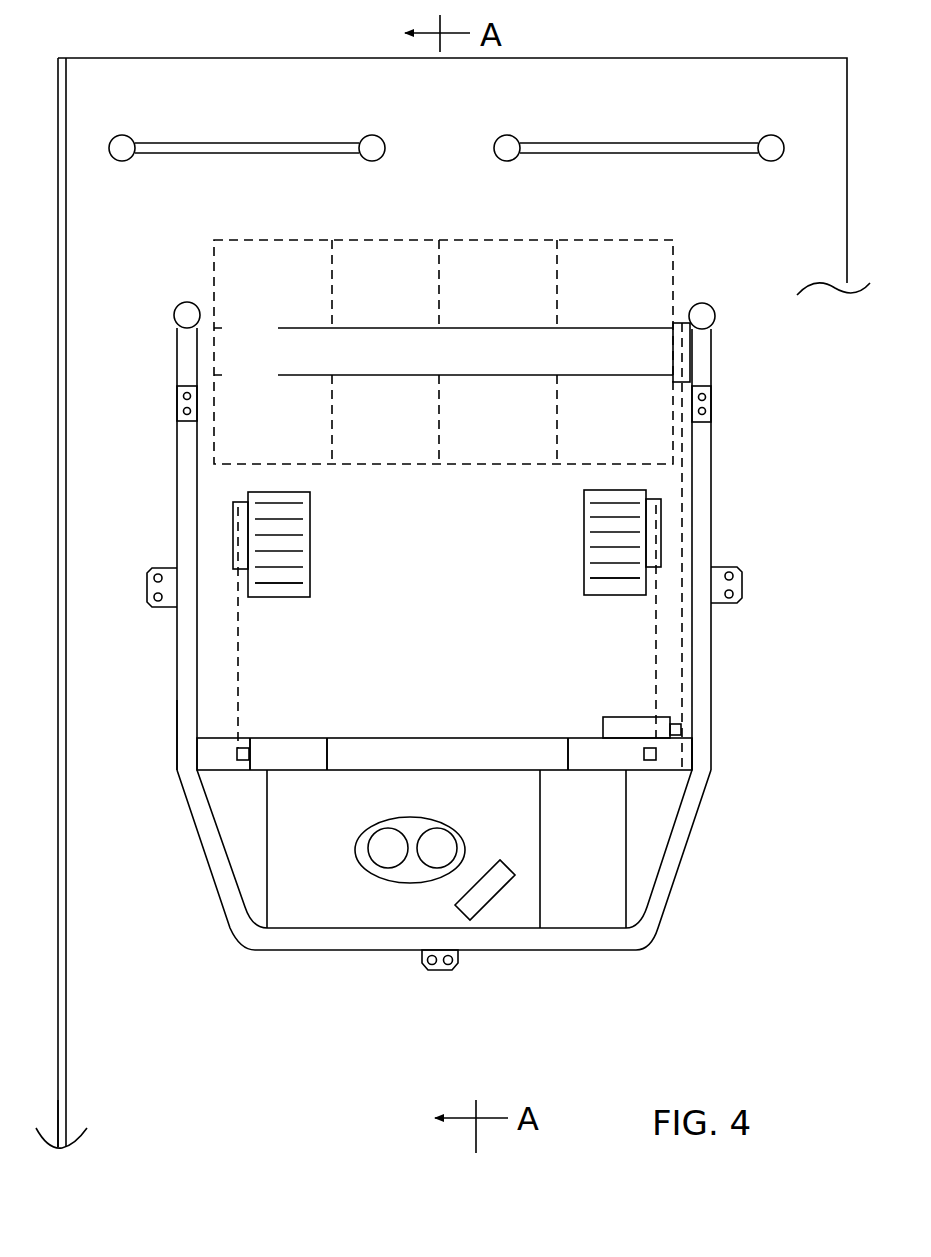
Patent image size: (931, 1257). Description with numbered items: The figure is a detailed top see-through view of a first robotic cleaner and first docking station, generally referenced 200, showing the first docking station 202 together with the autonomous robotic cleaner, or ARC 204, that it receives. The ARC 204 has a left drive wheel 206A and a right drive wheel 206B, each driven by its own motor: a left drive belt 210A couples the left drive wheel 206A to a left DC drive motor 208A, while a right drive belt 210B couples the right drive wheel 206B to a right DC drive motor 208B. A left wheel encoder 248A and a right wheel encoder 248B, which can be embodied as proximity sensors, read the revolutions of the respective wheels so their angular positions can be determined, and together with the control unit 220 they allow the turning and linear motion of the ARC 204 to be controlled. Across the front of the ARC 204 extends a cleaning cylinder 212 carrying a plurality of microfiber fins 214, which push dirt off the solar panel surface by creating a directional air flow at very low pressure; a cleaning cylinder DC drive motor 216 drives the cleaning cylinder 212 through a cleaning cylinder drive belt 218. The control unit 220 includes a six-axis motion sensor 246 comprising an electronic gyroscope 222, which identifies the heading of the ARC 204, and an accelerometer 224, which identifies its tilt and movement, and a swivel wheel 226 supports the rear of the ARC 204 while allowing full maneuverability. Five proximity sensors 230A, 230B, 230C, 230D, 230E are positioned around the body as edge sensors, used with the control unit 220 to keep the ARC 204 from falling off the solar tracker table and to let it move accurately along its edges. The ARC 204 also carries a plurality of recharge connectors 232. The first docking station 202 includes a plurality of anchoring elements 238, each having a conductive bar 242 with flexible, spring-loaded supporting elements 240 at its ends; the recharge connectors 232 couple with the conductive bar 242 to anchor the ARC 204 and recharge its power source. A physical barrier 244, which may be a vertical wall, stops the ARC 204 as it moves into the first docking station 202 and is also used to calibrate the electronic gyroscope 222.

The first robotic cleaner and first docking station 200 is at (235, 1087).
The first docking station 202 is at (195, 62).
The ARC 204 is at (163, 745).
The left drive wheel 206A is at (310, 542).
The right drive wheel 206B is at (584, 522).
The left DC drive motor 208A is at (277, 752).
The right DC drive motor 208B is at (617, 752).
The left drive belt 210A is at (238, 675).
The right drive belt 210B is at (656, 648).
The cleaning cylinder 212 is at (385, 352).
The microfiber fins 214 is at (508, 262).
The cleaning cylinder DC drive motor 216 is at (625, 730).
The cleaning cylinder drive belt 218 is at (693, 480).
The control unit 220 is at (295, 912).
The electronic gyroscope 222 is at (388, 848).
The accelerometer 224 is at (440, 848).
The swivel wheel 226 is at (487, 880).
The proximity sensor 230A is at (177, 403).
The proximity sensor 230B is at (147, 578).
The proximity sensor 230C is at (439, 975).
The proximity sensor 230D is at (742, 583).
The proximity sensor 230E is at (711, 400).
The recharge connectors 232 is at (187, 312).
The anchoring elements 238 is at (317, 88).
The supporting elements 240 is at (118, 148).
The conductive bar 242 is at (268, 143).
The physical barrier 244 is at (58, 728).
The 6-axis motion sensor 246 is at (430, 822).
The left wheel encoder 248A is at (283, 580).
The right wheel encoder 248B is at (621, 595).